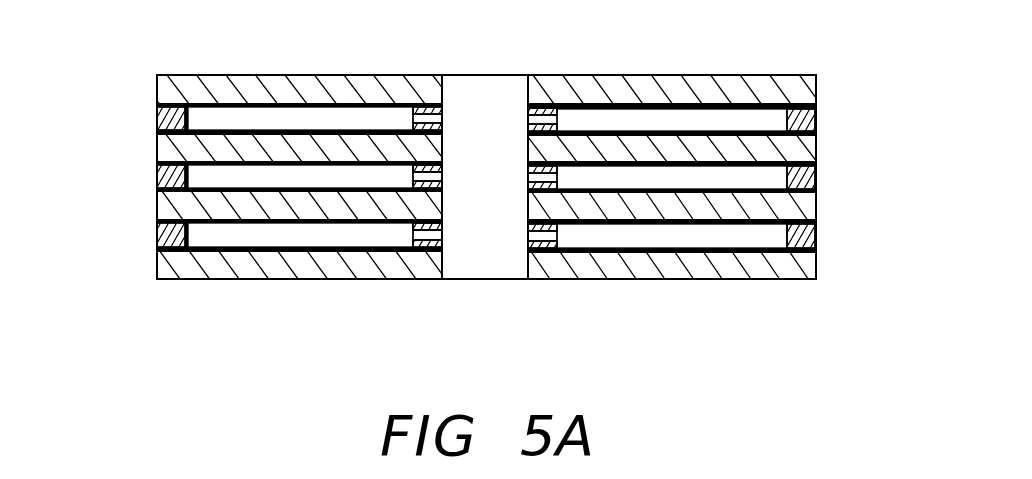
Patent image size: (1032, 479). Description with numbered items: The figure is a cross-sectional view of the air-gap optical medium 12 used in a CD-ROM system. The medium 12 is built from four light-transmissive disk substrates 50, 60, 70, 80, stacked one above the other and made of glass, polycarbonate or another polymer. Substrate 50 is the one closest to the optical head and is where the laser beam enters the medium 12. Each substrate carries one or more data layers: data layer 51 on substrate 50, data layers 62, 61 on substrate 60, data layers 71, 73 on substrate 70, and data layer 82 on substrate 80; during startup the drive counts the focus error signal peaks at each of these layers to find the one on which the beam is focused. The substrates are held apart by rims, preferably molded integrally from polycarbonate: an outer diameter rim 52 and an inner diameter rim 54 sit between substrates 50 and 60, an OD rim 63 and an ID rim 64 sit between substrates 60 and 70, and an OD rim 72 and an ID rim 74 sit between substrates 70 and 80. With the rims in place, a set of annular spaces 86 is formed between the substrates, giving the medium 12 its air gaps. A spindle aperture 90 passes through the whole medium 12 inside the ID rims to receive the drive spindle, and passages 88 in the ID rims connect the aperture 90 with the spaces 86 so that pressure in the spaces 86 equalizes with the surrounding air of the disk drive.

The air-gap optical medium 12 is at (250, 320).
The disk substrate 50 is at (157, 270).
The data layer 51 is at (818, 249).
The outer diameter rim 52 is at (157, 240).
The inner diameter rim 54 is at (442, 228).
The disk substrate 60 is at (157, 211).
The data layer 61 is at (818, 191).
The data layer 62 is at (816, 228).
The outer diameter rim 63 is at (157, 180).
The inner diameter rim 64 is at (442, 170).
The disk substrate 70 is at (157, 151).
The data layer 71 is at (816, 170).
The outer diameter rim 72 is at (157, 117).
The data layer 73 is at (818, 131).
The inner diameter rim 74 is at (442, 110).
The disk substrate 80 is at (157, 91).
The data layer 82 is at (816, 110).
The annular spaces 86 is at (302, 131).
The passages 88 is at (528, 118).
The spindle aperture 90 is at (516, 76).